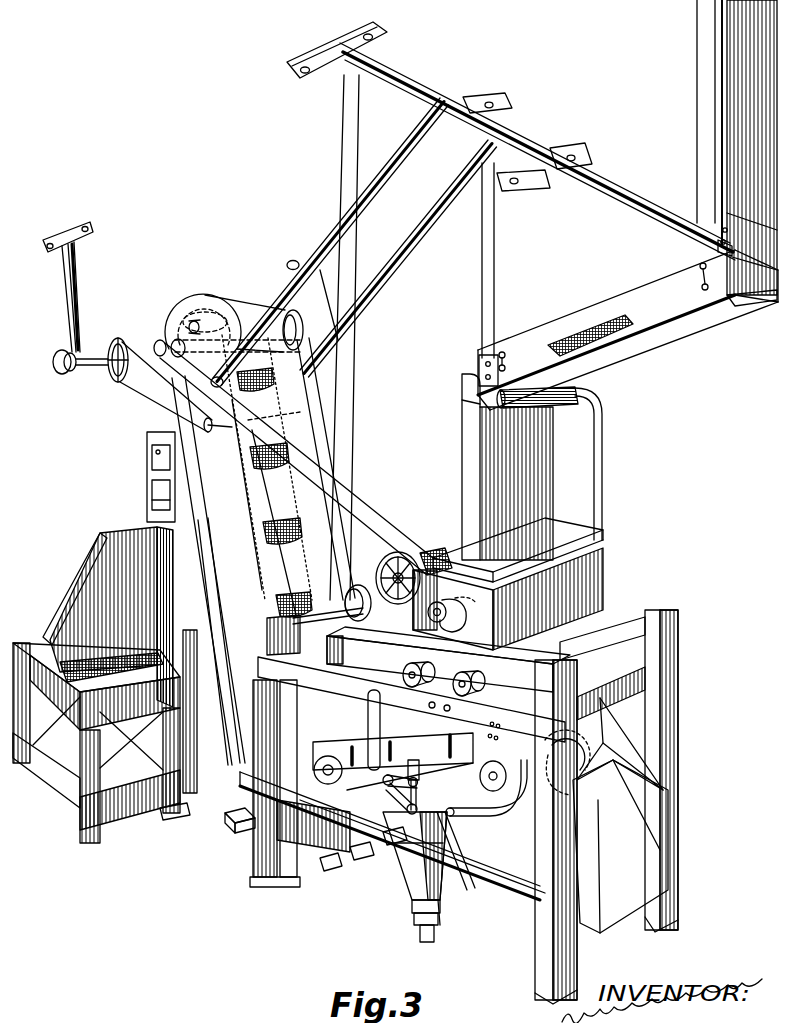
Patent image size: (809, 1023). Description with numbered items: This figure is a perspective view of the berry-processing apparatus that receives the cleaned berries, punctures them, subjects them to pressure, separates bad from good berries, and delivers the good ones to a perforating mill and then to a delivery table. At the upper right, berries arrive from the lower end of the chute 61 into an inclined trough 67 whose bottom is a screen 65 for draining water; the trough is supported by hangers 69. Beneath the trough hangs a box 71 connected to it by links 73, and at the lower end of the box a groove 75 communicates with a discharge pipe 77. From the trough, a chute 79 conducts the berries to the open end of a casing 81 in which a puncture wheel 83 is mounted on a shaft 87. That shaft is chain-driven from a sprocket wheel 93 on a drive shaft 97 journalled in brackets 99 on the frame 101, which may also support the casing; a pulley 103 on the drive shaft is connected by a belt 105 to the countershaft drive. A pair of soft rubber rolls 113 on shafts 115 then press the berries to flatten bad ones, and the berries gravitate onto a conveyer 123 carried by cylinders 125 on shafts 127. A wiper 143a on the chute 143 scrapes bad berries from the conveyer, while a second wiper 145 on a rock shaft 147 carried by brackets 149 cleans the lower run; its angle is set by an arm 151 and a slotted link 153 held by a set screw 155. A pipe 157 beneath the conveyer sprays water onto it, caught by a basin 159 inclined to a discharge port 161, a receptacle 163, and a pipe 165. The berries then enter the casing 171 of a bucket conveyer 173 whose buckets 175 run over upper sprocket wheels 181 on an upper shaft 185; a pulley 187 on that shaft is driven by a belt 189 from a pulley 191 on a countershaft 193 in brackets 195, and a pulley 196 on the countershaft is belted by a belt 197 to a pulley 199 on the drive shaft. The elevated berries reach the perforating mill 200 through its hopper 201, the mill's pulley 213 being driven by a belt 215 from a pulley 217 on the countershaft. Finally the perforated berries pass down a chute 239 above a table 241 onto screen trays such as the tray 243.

The chute 61 is at (712, 123).
The screen 65 is at (600, 340).
The inclined trough 67 is at (638, 268).
The hangers 69 is at (712, 70).
The box 71 is at (700, 326).
The links 73 is at (505, 355).
The groove 75 is at (582, 404).
The discharge pipe 77 is at (598, 446).
The chute 79 is at (478, 460).
The casing 81 is at (603, 545).
The puncture wheel 83 is at (606, 574).
The shaft 87 is at (457, 613).
The sprocket wheel 93 is at (408, 556).
The drive shaft 97 is at (318, 600).
The brackets 99 is at (250, 660).
The frame 101 is at (262, 738).
The pulley 103 is at (365, 585).
The belt 105 is at (356, 418).
The rolls 113 is at (486, 668).
The shafts 115 is at (402, 672).
The conveyer 123 is at (340, 870).
The cylinders 125 is at (560, 753).
The shafts 127 is at (260, 810).
The chute 143 is at (640, 845).
The wiper 143a is at (650, 745).
The wiper 145 is at (463, 860).
The rock shaft 147 is at (411, 815).
The brackets 149 is at (424, 762).
The arm 151 is at (410, 773).
The link 153 is at (393, 761).
The set screw 155 is at (410, 870).
The pipe 157 is at (505, 815).
The basin 159 is at (520, 870).
The discharge port 161 is at (440, 880).
The receptacle 163 is at (438, 912).
The pipe 165 is at (426, 940).
The casing 171 is at (292, 448).
The bucket conveyer 173 is at (260, 410).
The buckets 175 is at (275, 380).
The upper sprocket wheels 181 is at (205, 312).
The upper shaft 185 is at (188, 327).
The pulley 187 is at (304, 328).
The belt 189 is at (240, 318).
The pulley 191 is at (181, 343).
The countershaft 193 is at (97, 368).
The brackets 195 is at (70, 283).
The pulley 196 is at (158, 344).
The belt 197 is at (345, 500).
The pulley 199 is at (395, 556).
The perforating mill 200 is at (140, 472).
The hopper 201 is at (178, 413).
The pulley 213 is at (290, 414).
The belt 215 is at (160, 410).
The pulley 217 is at (116, 340).
The chute 239 is at (78, 580).
The table 241 is at (105, 735).
The tray 243 is at (118, 660).